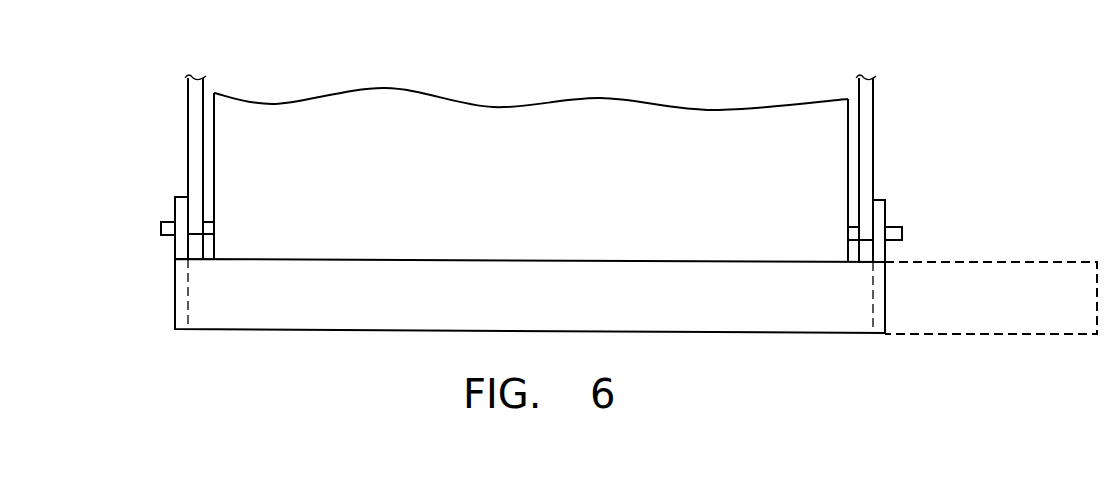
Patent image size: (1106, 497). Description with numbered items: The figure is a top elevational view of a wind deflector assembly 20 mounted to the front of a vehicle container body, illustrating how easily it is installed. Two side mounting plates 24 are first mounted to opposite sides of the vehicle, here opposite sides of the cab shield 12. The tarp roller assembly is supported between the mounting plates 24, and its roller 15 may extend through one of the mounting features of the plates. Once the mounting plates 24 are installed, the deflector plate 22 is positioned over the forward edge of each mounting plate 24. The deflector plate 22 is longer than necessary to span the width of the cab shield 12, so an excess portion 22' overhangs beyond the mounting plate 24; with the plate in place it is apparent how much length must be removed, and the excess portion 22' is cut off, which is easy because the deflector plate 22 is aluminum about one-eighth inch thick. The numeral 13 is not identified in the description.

The cab shield 12 is at (192, 98).
The flexible panel 13 is at (306, 143).
The roller 15 is at (900, 236).
The wind deflector assembly 20 is at (342, 332).
The deflector plate 22 is at (530, 328).
The excess portion 22' is at (991, 331).
The side mounting plates 24 is at (182, 210).